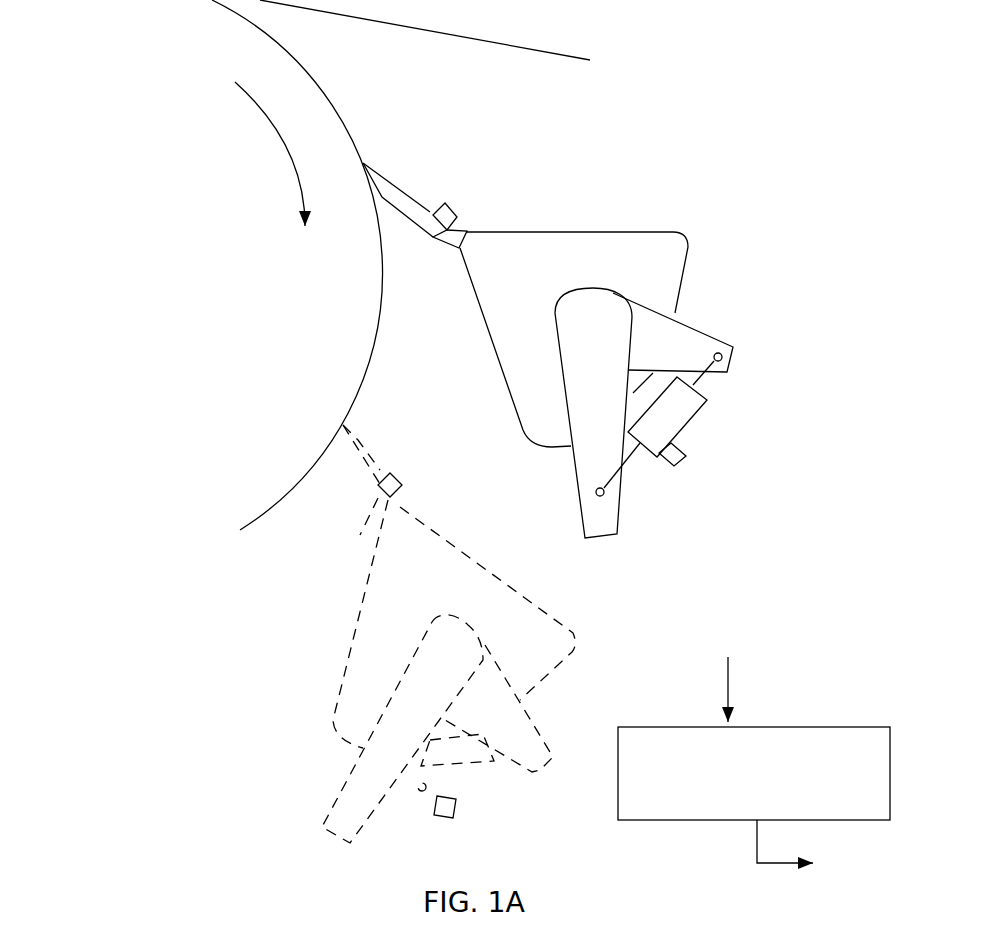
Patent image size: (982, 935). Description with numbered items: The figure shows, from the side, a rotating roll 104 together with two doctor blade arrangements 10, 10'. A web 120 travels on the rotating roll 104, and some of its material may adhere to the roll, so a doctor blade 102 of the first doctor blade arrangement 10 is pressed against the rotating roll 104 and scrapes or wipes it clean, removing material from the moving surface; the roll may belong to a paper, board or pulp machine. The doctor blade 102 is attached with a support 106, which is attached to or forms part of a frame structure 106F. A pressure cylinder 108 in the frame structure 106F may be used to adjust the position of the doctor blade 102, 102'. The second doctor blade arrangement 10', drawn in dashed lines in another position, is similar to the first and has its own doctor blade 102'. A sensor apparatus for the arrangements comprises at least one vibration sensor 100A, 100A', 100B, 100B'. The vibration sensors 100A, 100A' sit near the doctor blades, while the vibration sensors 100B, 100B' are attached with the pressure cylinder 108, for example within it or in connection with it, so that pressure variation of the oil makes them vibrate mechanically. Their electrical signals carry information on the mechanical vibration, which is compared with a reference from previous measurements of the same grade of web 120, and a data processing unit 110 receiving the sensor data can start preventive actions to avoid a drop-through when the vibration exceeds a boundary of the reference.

The doctor blade arrangement 10 is at (561, 463).
The doctor blade arrangement 10' is at (373, 634).
The doctor blade 102 is at (418, 186).
The doctor blade 102' is at (395, 440).
The vibration sensor 100A is at (491, 195).
The vibration sensor 100A' is at (440, 464).
The vibration sensor 100B is at (718, 479).
The vibration sensor 100B' is at (495, 834).
The rotating roll 104 is at (245, 260).
The support 106 is at (440, 236).
The frame structure 106F is at (650, 225).
The pressure cylinder 108 is at (688, 422).
The data processing unit 110 is at (815, 725).
The web 120 is at (523, 42).